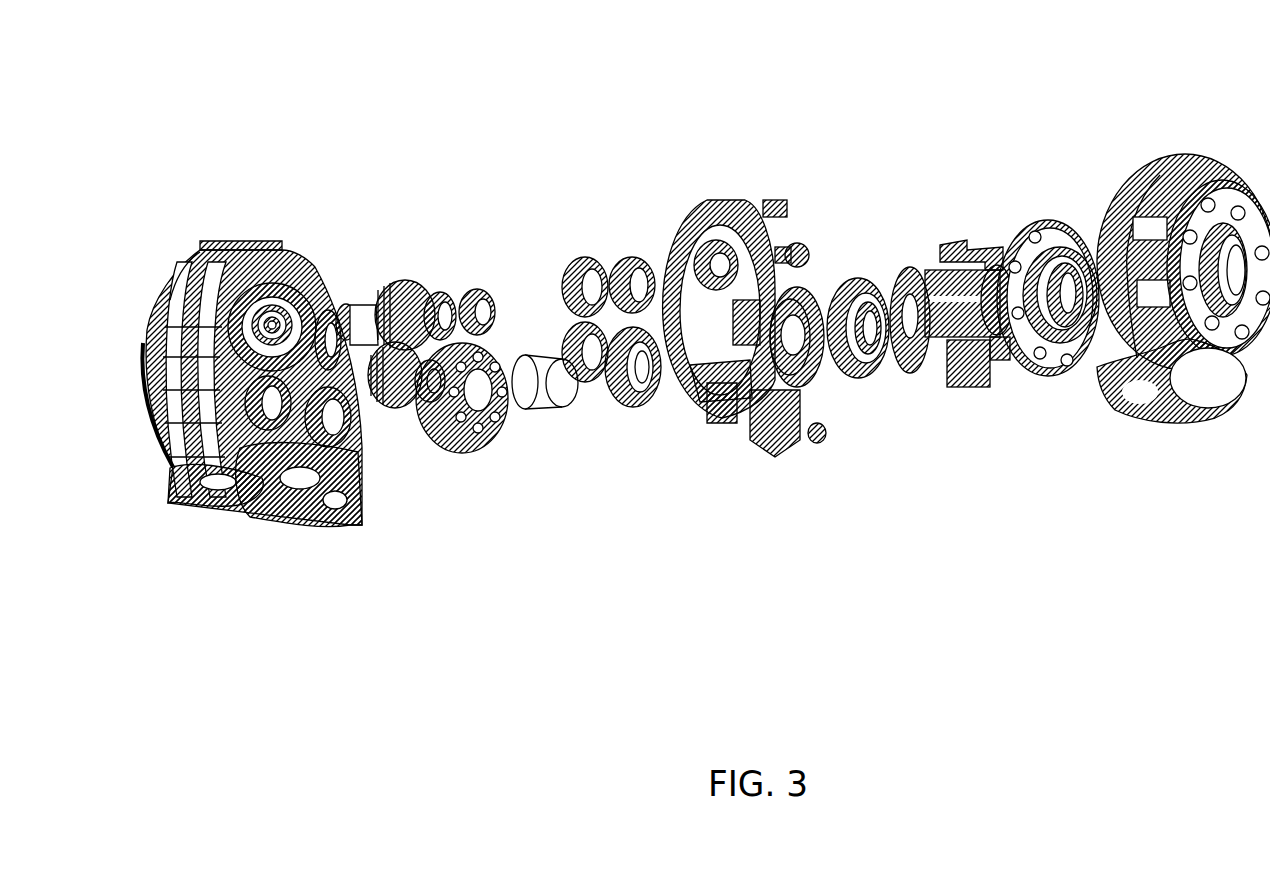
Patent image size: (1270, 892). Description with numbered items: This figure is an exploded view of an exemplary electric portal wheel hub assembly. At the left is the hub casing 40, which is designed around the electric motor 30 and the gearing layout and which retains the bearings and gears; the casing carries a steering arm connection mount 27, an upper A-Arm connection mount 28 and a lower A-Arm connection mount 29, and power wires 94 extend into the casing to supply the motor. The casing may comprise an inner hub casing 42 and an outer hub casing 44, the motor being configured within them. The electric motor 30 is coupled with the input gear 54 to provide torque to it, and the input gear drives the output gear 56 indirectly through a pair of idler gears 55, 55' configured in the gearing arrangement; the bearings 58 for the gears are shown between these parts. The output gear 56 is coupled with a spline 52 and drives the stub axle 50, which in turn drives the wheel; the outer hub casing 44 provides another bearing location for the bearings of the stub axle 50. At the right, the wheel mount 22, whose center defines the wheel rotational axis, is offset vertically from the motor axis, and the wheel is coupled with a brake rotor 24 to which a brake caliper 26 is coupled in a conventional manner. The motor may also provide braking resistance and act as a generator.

The wheel mount 22 is at (1218, 203).
The brake rotor 24 is at (1137, 200).
The brake caliper 26 is at (1152, 400).
The steering arm connection mount 27 is at (203, 247).
The upper A-Arm connection mount 28 is at (262, 245).
The lower A-Arm connection mount 29 is at (340, 526).
The electric motor 30 is at (290, 307).
The hub casing 40 is at (160, 430).
The inner hub casing 42 is at (203, 443).
The outer hub casing 44 is at (743, 425).
The stub axle 50 is at (1023, 340).
The spline 52 is at (950, 320).
The input gear 54 is at (397, 300).
The idler gear 55 is at (466, 270).
The idler gear 55' is at (413, 423).
The output gear 56 is at (488, 430).
The bearings 58 is at (598, 378).
The power wires 94 is at (193, 272).